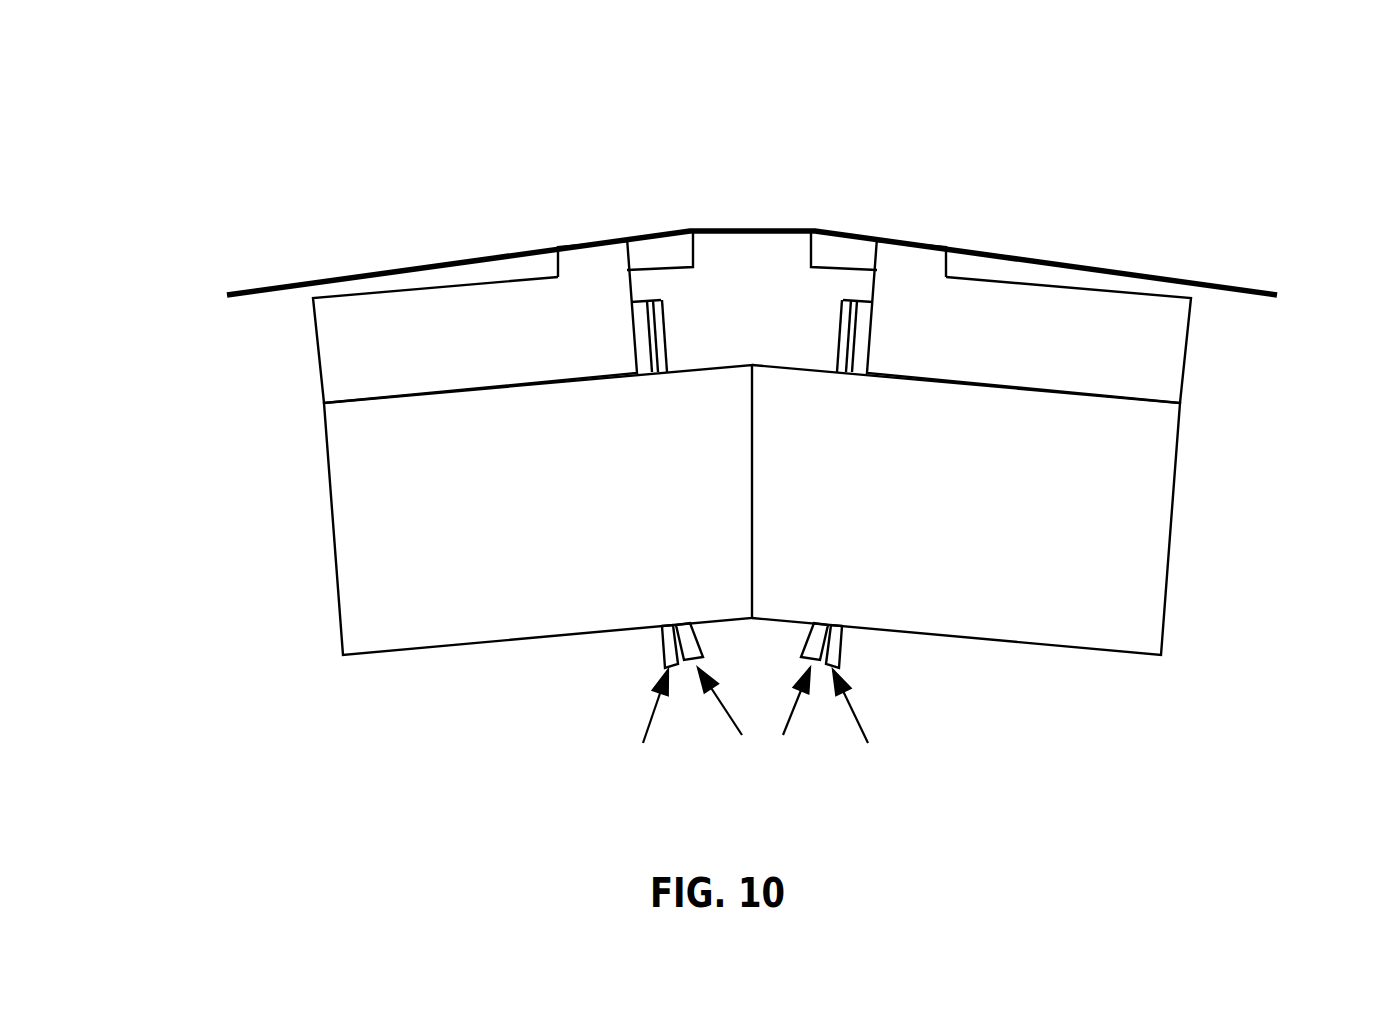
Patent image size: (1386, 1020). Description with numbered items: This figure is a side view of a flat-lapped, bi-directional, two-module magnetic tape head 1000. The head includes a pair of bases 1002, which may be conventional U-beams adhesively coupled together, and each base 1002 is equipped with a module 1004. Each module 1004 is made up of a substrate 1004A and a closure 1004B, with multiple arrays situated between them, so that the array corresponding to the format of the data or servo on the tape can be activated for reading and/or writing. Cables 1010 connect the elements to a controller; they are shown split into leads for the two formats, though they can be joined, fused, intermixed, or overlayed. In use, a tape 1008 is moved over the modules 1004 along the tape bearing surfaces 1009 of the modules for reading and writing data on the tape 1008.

The magnetic tape head 1000 is at (450, 185).
The base 1002 is at (329, 495).
The module 1004 is at (752, 275).
The substrate 1004A is at (397, 327).
The closure 1004B is at (805, 252).
The tape 1008 is at (1185, 277).
The tape bearing surface 1009 is at (592, 212).
The cables 1010 is at (840, 336).